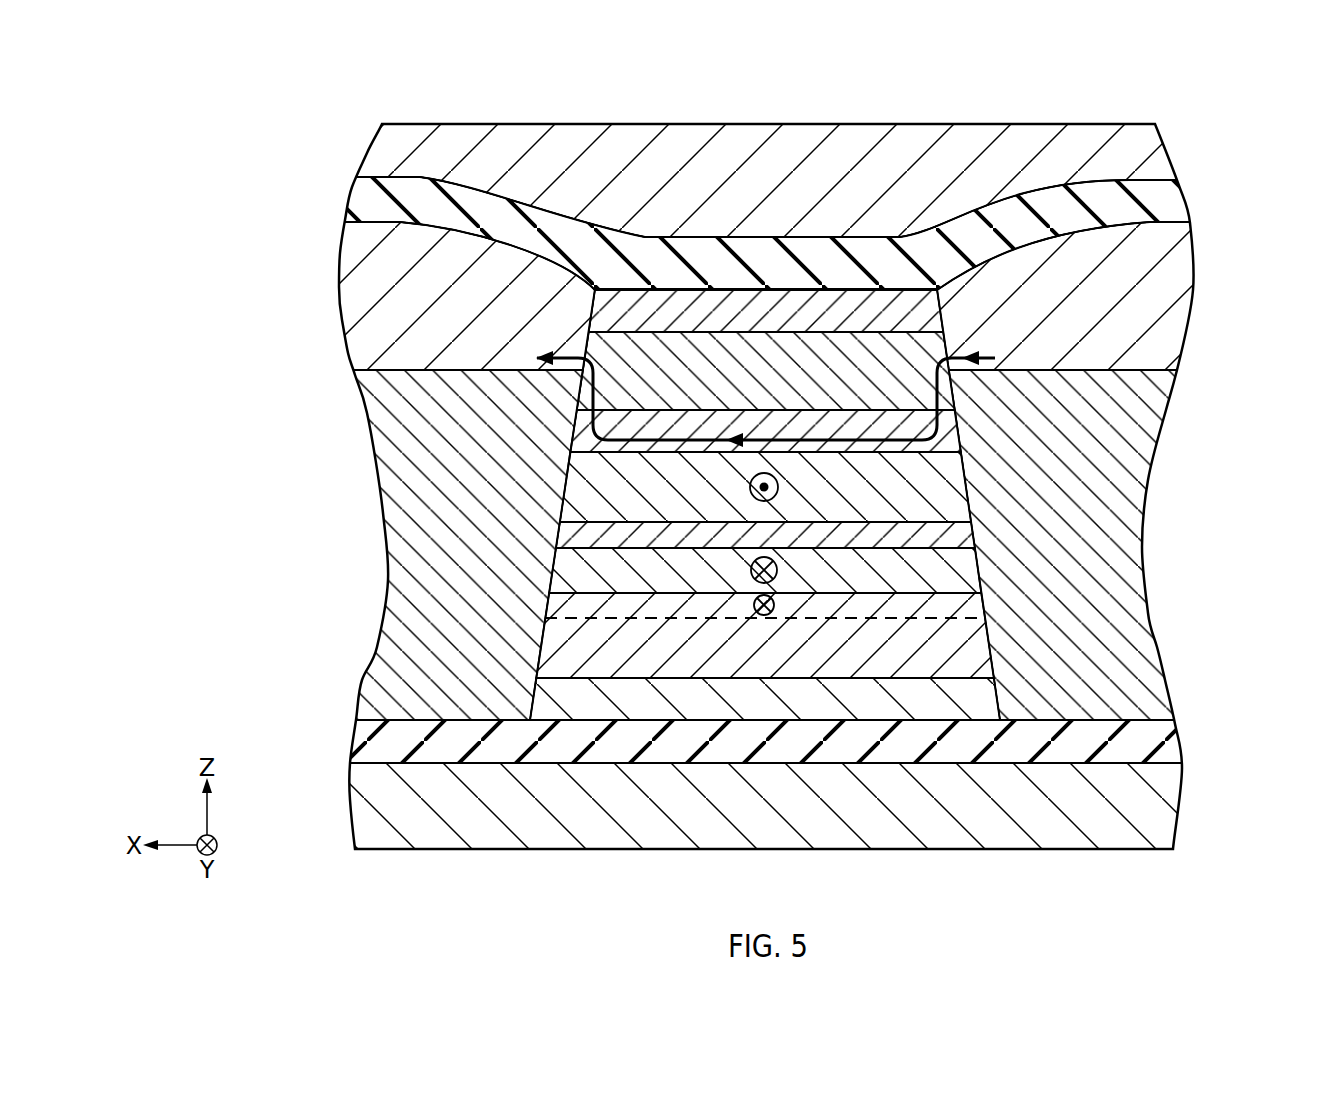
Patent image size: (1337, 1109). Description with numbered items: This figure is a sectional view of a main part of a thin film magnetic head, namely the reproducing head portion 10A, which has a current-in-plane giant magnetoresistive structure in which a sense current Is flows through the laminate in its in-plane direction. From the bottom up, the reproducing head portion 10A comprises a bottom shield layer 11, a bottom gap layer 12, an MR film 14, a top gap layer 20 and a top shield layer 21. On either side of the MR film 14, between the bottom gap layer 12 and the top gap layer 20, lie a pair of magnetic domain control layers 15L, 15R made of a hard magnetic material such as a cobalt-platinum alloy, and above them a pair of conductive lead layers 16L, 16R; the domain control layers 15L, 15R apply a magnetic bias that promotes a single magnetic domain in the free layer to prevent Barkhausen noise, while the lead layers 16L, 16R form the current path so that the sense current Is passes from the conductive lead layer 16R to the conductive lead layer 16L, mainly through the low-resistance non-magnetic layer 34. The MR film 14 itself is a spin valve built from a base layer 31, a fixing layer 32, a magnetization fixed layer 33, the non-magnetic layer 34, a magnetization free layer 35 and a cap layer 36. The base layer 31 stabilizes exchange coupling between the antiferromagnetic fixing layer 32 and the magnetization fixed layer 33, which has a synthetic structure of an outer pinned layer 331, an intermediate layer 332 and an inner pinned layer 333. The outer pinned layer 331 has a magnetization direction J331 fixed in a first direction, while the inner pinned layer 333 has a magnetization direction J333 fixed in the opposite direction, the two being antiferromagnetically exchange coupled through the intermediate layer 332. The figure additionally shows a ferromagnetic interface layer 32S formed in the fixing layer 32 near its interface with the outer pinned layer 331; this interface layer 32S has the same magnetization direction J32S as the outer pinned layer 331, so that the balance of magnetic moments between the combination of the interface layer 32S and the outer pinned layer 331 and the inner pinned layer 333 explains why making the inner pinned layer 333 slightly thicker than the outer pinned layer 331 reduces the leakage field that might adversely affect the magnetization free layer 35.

The reproducing head portion 10A is at (1096, 87).
The top shield layer 21 is at (390, 147).
The top gap layer 20 is at (372, 194).
The conductive lead layer 16L is at (365, 270).
The conductive lead layer 16R is at (1178, 287).
The magnetic domain control layer 15L is at (380, 678).
The magnetic domain control layer 15R is at (1108, 558).
The MR film 14 is at (576, 504).
The cap layer 36 is at (632, 313).
The magnetization free layer 35 is at (595, 345).
The non-magnetic layer 34 is at (580, 430).
The magnetization fixed layer 33 is at (595, 511).
The inner pinned layer 333 is at (598, 458).
The intermediate layer 332 is at (600, 483).
The outer pinned layer 331 is at (590, 540).
The ferromagnetic interface layer 32S is at (572, 605).
The fixing layer 32 is at (572, 633).
The base layer 31 is at (641, 668).
The bottom gap layer 12 is at (362, 735).
The bottom shield layer 11 is at (362, 795).
The sense current Is is at (842, 440).
The magnetization direction J333 is at (778, 488).
The magnetization direction J331 is at (778, 572).
The magnetization direction J32S is at (775, 607).